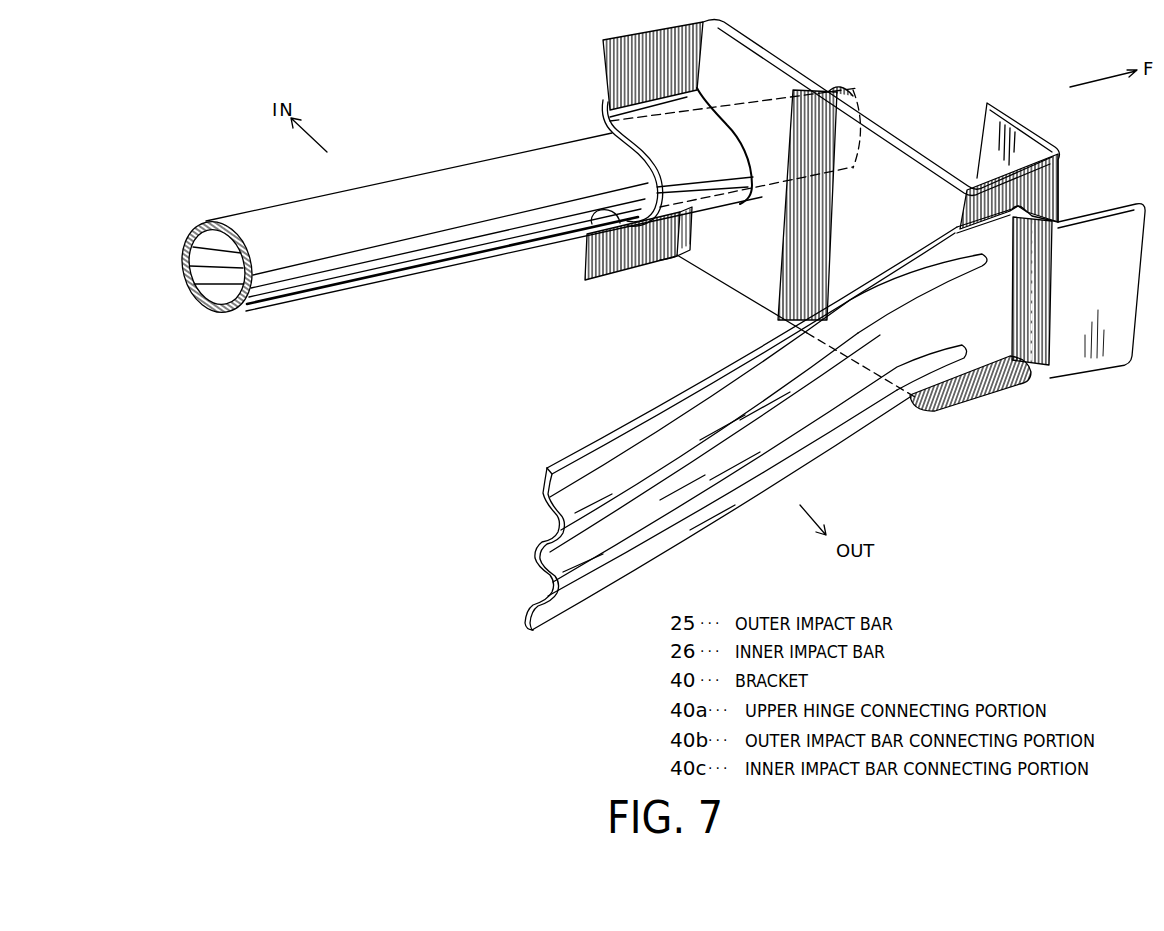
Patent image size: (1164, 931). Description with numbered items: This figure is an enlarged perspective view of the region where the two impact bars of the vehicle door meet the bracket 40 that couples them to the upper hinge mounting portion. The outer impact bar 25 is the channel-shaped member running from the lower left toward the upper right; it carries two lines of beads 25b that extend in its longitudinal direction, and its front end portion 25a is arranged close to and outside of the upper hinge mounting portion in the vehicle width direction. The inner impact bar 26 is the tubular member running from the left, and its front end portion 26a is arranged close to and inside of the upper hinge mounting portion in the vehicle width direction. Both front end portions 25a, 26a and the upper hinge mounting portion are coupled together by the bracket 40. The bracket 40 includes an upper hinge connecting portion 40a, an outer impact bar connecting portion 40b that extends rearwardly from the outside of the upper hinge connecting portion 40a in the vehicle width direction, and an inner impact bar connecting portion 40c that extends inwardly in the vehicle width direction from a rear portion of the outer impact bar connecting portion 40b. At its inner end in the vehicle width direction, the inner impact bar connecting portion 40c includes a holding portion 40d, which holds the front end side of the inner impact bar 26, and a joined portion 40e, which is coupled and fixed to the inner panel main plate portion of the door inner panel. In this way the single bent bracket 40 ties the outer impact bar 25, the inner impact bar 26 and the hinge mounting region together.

The outer impact bar 25 is at (623, 427).
The front end portion of the outer impact bar 25a is at (993, 331).
The beads 25b is at (598, 566).
The inner impact bar 26 is at (339, 300).
The front end portion of the inner impact bar 26a is at (773, 96).
The bracket 40 is at (727, 301).
The upper hinge connecting portion 40a is at (1032, 131).
The outer impact bar connecting portion 40b is at (1042, 178).
The inner impact bar connecting portion 40c is at (912, 167).
The holding portion 40d is at (668, 160).
The joined portion 40e is at (615, 72).